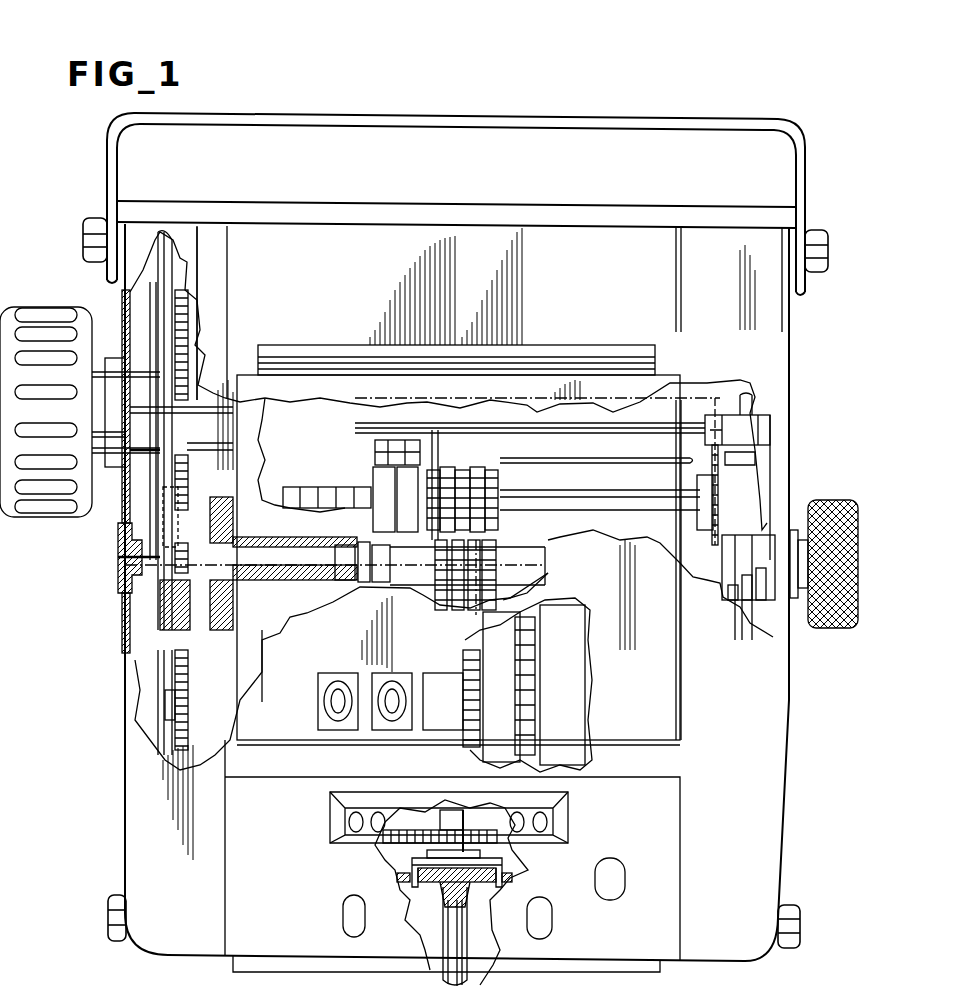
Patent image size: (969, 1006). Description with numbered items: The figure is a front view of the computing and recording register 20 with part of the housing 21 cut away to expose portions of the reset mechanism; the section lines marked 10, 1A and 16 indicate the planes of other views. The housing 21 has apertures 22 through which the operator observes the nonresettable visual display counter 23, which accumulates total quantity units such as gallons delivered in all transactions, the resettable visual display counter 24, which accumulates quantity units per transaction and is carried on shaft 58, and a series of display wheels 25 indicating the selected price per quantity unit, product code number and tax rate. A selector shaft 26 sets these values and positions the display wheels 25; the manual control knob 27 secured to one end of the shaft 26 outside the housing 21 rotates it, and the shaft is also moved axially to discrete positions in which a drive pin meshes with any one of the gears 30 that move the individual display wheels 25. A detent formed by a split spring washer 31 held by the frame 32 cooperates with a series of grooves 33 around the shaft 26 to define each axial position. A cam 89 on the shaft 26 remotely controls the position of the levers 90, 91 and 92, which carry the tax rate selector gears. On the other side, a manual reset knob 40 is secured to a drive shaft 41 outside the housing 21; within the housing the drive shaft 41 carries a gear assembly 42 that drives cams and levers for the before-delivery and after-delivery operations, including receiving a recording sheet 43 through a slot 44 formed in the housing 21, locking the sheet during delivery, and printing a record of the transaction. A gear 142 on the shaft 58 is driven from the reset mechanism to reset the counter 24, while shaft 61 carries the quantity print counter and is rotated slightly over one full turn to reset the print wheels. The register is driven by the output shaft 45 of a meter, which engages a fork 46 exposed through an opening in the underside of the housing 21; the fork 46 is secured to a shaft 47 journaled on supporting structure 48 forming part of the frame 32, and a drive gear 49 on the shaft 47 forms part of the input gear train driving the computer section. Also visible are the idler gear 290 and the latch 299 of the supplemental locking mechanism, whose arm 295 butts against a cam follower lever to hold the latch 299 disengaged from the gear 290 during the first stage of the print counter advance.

The section line 10 is at (237, 240).
The section line 1A is at (476, 615).
The section line 16 is at (715, 398).
The computing and recording register 20 is at (122, 768).
The housing 21 is at (828, 778).
The apertures 22 is at (300, 487).
The nonresettable visual display counter 23 is at (350, 488).
The resettable visual display counter 24 is at (488, 740).
The display wheels 25 is at (485, 470).
The selector shaft 26 is at (422, 568).
The manual control knob 27 is at (830, 500).
The gears 30 is at (452, 600).
The split spring washer 31 is at (375, 583).
The frame 32 is at (348, 582).
The grooves 33 is at (325, 582).
The manual reset knob 40 is at (42, 312).
The drive shaft 41 is at (247, 425).
The gear assembly 42 is at (172, 478).
The recording sheet 43 is at (316, 360).
The slot 44 is at (565, 360).
The output shaft 45 is at (470, 932).
The fork 46 is at (512, 876).
The shaft 47 is at (395, 855).
The supporting structure 48 is at (467, 812).
The drive gear 49 is at (505, 845).
The shaft 58 is at (165, 722).
The shaft 61 is at (583, 500).
The cam 89 is at (750, 540).
The lever 90 is at (768, 612).
The lever 91 is at (745, 615).
The lever 92 is at (733, 595).
The gear 142 is at (185, 752).
The idler gear 290 is at (700, 500).
The arm 295 is at (740, 395).
The latch 299 is at (707, 458).